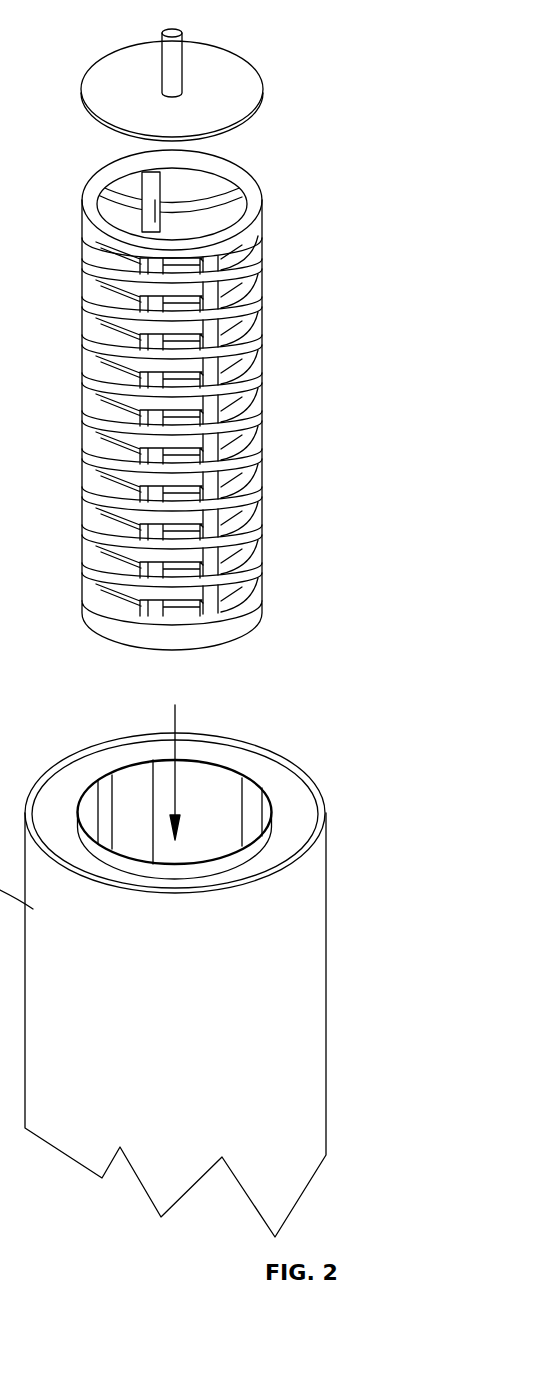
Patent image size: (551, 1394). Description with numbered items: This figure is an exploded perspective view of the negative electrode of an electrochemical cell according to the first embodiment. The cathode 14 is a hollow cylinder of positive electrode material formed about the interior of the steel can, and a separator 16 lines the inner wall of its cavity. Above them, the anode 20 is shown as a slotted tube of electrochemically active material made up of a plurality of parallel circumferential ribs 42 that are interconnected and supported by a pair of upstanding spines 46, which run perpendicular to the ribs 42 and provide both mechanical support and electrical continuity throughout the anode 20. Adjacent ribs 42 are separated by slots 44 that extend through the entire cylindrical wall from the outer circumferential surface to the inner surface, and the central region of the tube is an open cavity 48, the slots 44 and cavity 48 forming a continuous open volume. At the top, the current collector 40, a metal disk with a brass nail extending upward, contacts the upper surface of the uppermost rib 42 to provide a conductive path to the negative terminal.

The cathode 14 is at (288, 812).
The separator 16 is at (207, 762).
The anode 20 is at (190, 401).
The current collector 40 is at (197, 55).
The circumferential ribs 42 is at (257, 256).
The slots 44 is at (236, 332).
The spines 46 is at (153, 221).
The open cavity 48 is at (210, 196).